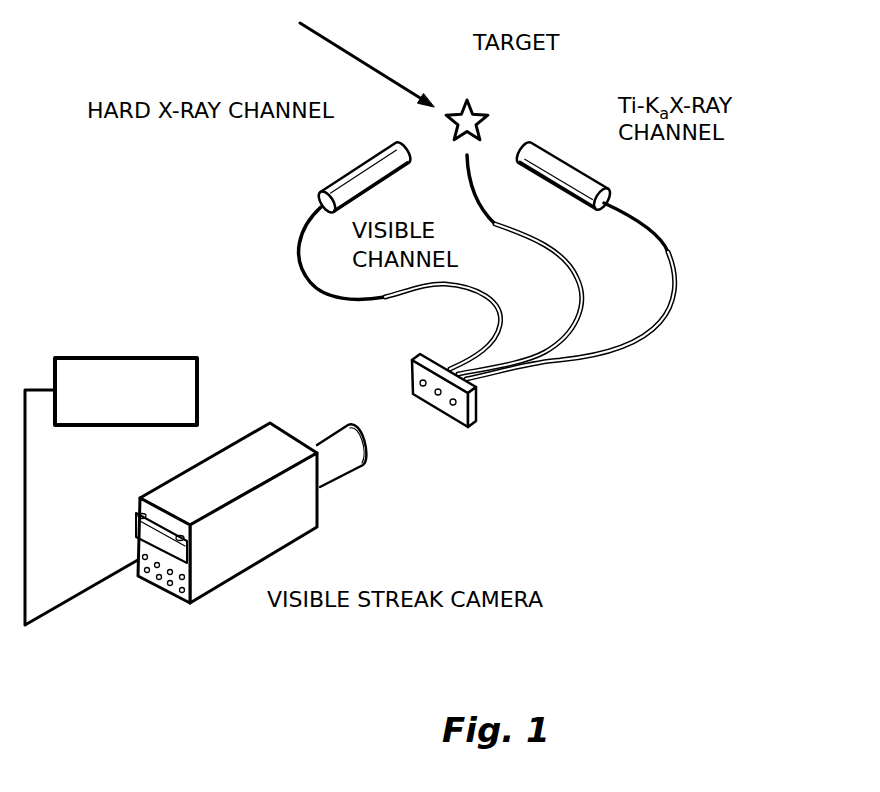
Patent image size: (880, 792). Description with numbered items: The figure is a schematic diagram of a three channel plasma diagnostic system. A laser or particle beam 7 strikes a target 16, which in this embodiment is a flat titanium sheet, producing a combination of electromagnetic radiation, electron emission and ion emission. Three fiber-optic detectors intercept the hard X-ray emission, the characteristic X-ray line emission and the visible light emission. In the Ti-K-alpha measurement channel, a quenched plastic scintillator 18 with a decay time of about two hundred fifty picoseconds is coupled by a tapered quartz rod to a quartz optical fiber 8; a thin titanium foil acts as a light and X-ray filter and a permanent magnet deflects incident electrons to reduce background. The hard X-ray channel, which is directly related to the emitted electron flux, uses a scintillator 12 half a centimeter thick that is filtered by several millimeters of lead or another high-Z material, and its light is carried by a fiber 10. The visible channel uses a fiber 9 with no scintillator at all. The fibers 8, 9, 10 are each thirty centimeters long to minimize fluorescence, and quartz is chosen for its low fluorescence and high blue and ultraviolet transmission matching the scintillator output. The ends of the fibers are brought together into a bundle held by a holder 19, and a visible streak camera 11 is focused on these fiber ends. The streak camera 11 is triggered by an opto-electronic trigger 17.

The laser or particle beam 7 is at (362, 62).
The quartz optical fiber 8 is at (653, 322).
The fiber 9 is at (520, 234).
The fiber 10 is at (300, 258).
The visible streak camera 11 is at (283, 537).
The scintillator 12 is at (363, 172).
The target 16 is at (470, 115).
The opto-electronic trigger 17 is at (105, 356).
The plastic scintillator 18 is at (565, 160).
The holder 19 is at (480, 406).